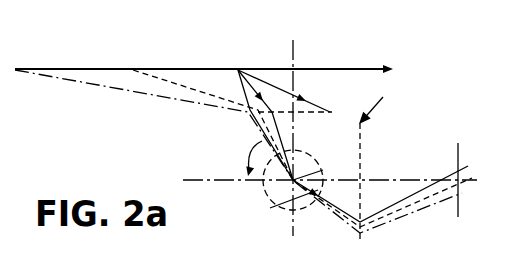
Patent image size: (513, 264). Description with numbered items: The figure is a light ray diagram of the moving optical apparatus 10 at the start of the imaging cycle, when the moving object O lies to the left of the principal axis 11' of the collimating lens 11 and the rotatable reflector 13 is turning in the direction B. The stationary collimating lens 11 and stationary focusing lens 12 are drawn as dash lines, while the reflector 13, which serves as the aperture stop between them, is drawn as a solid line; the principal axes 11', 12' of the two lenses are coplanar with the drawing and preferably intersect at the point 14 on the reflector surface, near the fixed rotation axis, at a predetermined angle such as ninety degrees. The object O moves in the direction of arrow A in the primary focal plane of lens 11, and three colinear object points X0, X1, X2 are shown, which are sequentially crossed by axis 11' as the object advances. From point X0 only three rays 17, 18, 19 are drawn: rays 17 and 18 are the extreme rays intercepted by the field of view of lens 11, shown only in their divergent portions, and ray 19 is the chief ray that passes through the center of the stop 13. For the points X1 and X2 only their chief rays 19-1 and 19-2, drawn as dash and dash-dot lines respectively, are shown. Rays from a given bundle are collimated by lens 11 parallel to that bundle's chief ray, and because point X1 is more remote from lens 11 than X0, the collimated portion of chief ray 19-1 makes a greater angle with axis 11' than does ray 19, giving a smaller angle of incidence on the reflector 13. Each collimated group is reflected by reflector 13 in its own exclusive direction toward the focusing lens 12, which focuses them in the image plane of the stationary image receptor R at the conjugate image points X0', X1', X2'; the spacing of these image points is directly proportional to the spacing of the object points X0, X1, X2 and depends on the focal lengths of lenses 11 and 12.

The moving optical apparatus 10 is at (378, 101).
The collimating lens 11 is at (297, 126).
The principal axis of lens 11 11' is at (306, 137).
The focusing lens 12 is at (374, 181).
The principal axis of lens 12 12' is at (330, 166).
The rotatable reflector 13 is at (280, 204).
The point on reflector surface 14 is at (316, 168).
The light ray 17 is at (245, 82).
The light ray 18 is at (306, 101).
The chief ray 19 is at (261, 97).
The chief ray of object point X1 19-1 is at (174, 83).
The chief ray of object point X2 19-2 is at (86, 86).
The direction of object movement A is at (335, 69).
The direction of reflector rotation B is at (242, 166).
The image receptor R is at (458, 143).
The object O is at (185, 69).
The object point X0 is at (228, 56).
The object point X1 is at (121, 56).
The object point X2 is at (26, 56).
The conjugate image point X0' is at (392, 187).
The conjugate image point X1' is at (397, 200).
The conjugate image point X2' is at (378, 212).